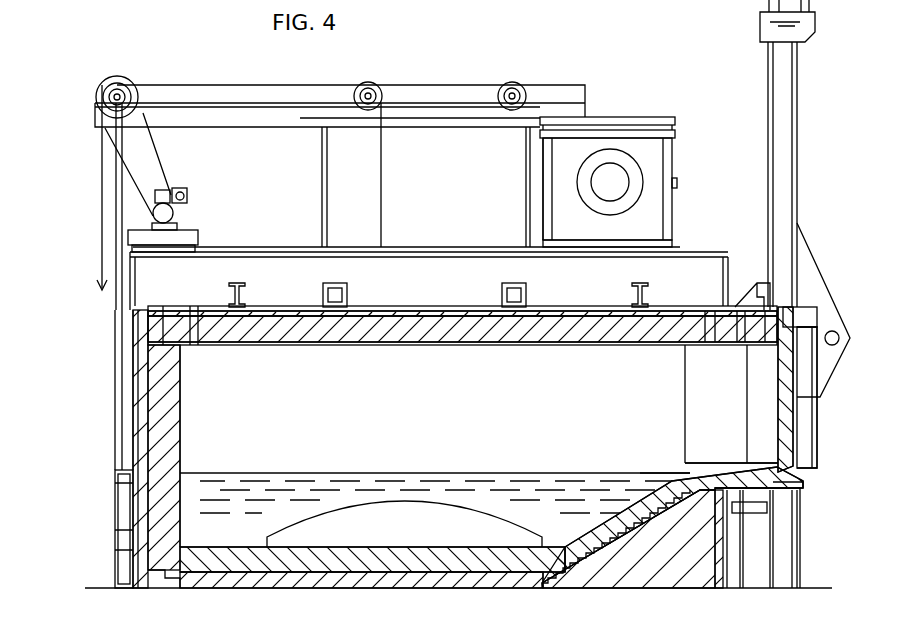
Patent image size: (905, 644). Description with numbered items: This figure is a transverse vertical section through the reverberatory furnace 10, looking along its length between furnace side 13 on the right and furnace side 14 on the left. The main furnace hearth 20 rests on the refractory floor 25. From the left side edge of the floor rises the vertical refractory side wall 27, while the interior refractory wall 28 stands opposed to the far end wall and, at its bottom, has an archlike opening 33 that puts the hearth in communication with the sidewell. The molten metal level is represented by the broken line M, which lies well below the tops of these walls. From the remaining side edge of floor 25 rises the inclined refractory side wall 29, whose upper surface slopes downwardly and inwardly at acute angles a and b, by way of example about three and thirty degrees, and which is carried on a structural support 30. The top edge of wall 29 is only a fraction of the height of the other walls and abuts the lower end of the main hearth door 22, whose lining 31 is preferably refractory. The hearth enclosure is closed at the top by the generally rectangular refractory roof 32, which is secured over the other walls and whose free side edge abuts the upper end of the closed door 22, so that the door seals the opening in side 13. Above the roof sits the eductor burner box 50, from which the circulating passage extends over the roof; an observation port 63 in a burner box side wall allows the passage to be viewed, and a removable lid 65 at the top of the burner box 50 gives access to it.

The reverberatory furnace 10 is at (70, 268).
The furnace side 13 is at (806, 535).
The furnace side 14 is at (106, 514).
The main furnace hearth 20 is at (340, 448).
The main hearth door 22 is at (796, 437).
The floor 25 is at (282, 572).
The refractory side wall 27 is at (180, 465).
The interior refractory wall 28 is at (430, 410).
The inclined refractory side wall 29 is at (618, 515).
The structural support 30 is at (673, 572).
The door lining 31 is at (785, 361).
The roof 32 is at (390, 343).
The archlike opening 33 is at (412, 503).
The eductor burner box 50 is at (683, 221).
The observation port 63 is at (677, 183).
The removable lid 65 is at (662, 125).
The molten metal level M is at (243, 473).
The acute angle a is at (696, 462).
The acute angle b is at (633, 471).